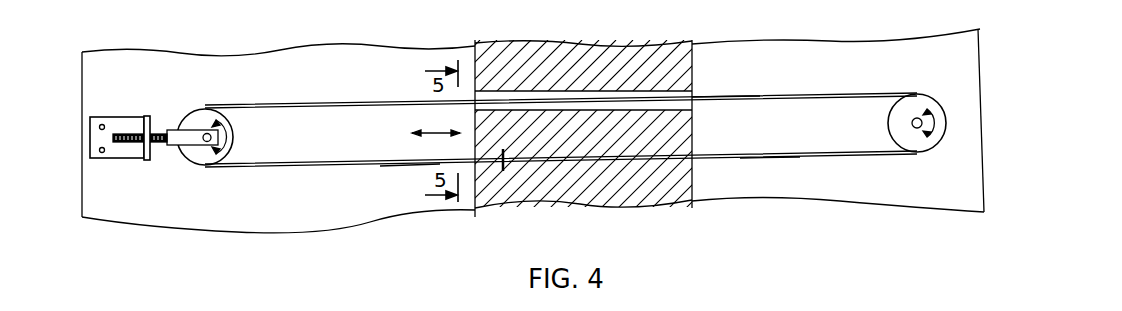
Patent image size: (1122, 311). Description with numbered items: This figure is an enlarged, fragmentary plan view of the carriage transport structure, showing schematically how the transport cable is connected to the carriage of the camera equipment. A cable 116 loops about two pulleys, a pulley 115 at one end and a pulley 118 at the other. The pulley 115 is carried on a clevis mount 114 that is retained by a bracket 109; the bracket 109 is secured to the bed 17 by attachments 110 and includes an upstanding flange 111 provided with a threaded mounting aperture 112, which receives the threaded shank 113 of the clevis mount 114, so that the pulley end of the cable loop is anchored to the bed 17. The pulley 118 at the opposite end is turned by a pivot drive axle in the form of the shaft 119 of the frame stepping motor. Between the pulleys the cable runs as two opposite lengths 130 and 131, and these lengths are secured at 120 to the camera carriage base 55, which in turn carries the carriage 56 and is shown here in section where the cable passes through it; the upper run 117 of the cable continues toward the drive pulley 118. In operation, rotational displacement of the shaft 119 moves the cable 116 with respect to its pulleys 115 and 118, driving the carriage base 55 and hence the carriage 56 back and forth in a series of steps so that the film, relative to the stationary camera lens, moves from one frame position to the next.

The bed 17 is at (163, 215).
The camera carriage base 55 is at (565, 58).
The carriage 56 is at (697, 42).
The bracket 109 is at (122, 125).
The attachments 110 is at (103, 124).
The upstanding flange 111 is at (148, 125).
The threaded mounting aperture 112 is at (138, 147).
The threaded shank 113 is at (162, 143).
The clevis mount 114 is at (190, 136).
The pulley 115 is at (233, 135).
The cable 116 is at (308, 103).
The upper belt run 117 is at (697, 97).
The pulley 118 is at (912, 110).
The shaft 119 is at (919, 128).
The securing point 120 is at (500, 152).
The cable length 130 is at (402, 163).
The cable length 131 is at (772, 158).